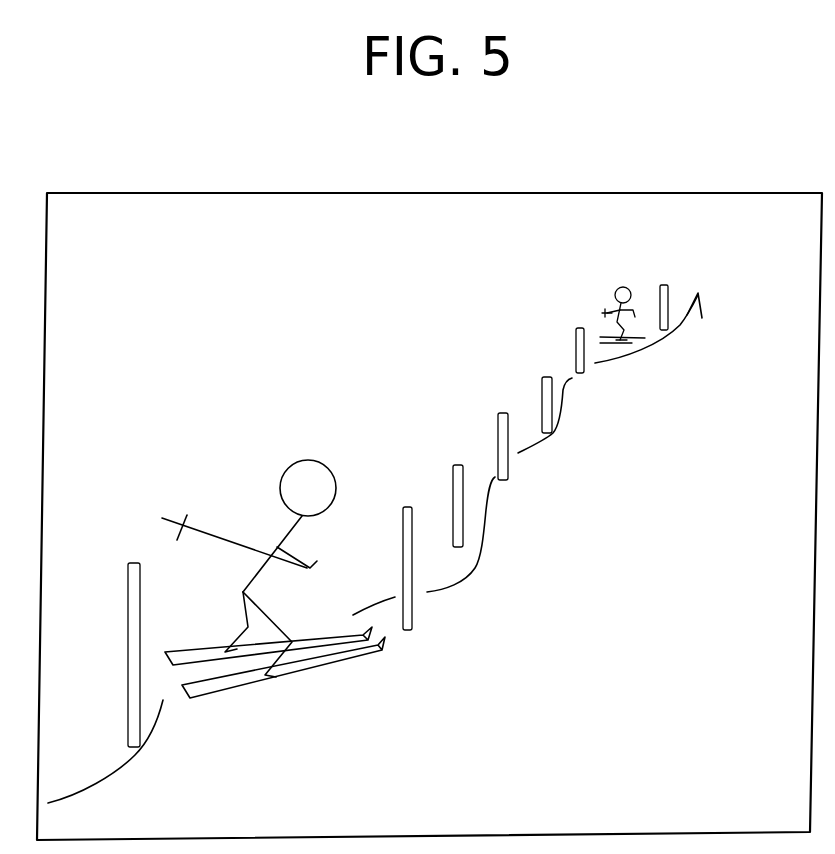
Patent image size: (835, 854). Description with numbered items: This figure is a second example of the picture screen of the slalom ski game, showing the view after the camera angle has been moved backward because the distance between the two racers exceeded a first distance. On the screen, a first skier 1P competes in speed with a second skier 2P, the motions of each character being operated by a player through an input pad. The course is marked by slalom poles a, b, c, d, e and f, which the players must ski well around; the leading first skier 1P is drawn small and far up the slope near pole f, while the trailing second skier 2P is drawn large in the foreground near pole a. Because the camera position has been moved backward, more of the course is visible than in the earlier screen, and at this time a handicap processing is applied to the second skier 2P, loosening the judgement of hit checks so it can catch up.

The pole a is at (133, 626).
The pole b is at (404, 540).
The pole c is at (460, 476).
The pole d is at (506, 422).
The pole e is at (547, 375).
The pole f is at (583, 322).
The first skier 1P is at (629, 283).
The second skier 2P is at (273, 546).